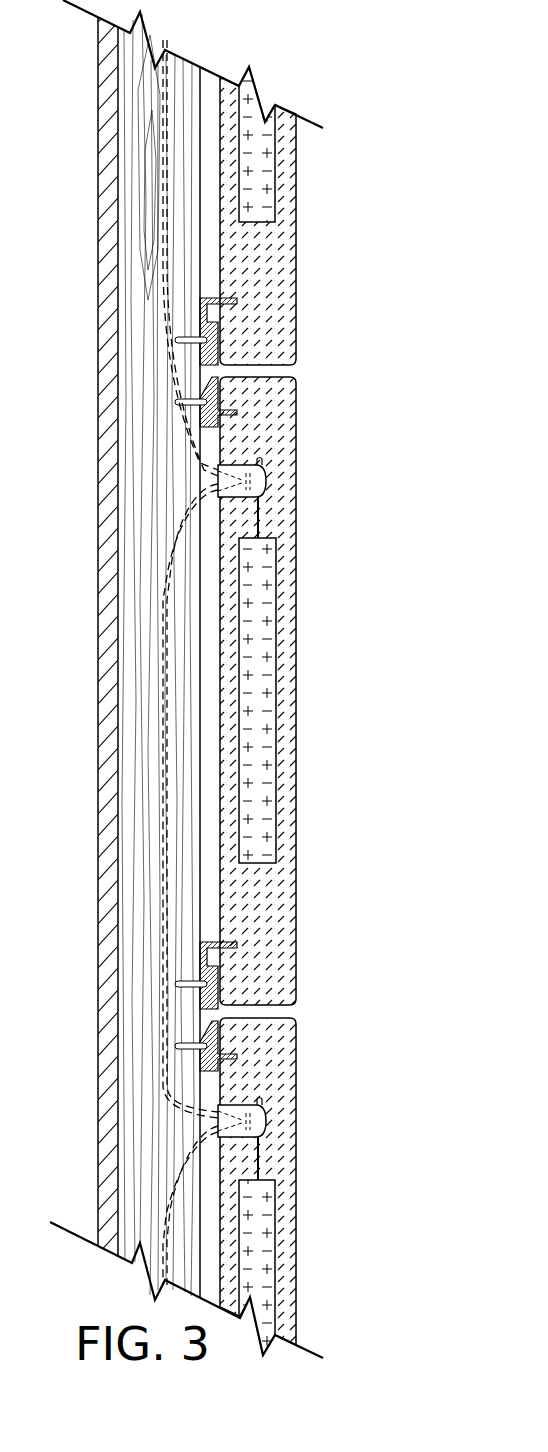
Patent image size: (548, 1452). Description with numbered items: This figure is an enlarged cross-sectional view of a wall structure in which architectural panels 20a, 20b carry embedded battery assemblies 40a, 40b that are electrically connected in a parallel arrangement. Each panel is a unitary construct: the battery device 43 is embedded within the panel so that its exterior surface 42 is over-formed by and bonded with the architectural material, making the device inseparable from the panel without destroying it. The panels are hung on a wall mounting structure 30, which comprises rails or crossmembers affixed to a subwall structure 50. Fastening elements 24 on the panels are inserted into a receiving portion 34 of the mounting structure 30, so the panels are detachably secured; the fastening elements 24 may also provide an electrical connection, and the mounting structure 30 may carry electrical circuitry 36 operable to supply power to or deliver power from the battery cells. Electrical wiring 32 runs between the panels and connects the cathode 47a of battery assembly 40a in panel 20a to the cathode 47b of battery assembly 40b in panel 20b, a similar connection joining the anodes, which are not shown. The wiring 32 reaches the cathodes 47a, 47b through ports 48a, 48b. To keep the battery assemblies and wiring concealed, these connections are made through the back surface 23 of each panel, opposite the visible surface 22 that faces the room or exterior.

The subwall structure 50 is at (153, 213).
The wall mounting structure 30 is at (200, 325).
The receiving portion 34 is at (210, 398).
The fastening elements 24 is at (205, 437).
The port 48a is at (222, 473).
The port 48b is at (230, 1110).
The back surface 23 is at (218, 568).
The electrical circuitry 36 is at (153, 744).
The electrical wiring 32 is at (165, 898).
The battery device 43 is at (277, 180).
The visible surface 22 is at (295, 440).
The panel 20a is at (221, 691).
The panel 20b is at (221, 1186).
The cathode 47a is at (258, 522).
The cathode 47b is at (258, 1163).
The battery assembly 40a is at (255, 703).
The battery assembly 40b is at (255, 1268).
The exterior surface 42 is at (276, 790).